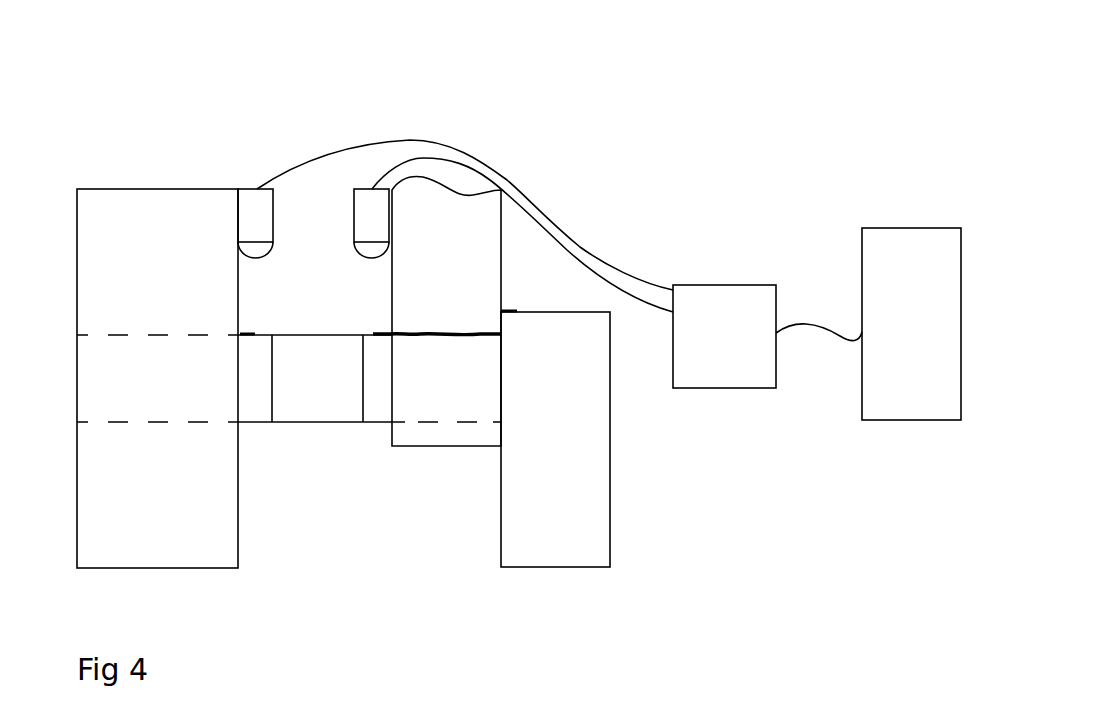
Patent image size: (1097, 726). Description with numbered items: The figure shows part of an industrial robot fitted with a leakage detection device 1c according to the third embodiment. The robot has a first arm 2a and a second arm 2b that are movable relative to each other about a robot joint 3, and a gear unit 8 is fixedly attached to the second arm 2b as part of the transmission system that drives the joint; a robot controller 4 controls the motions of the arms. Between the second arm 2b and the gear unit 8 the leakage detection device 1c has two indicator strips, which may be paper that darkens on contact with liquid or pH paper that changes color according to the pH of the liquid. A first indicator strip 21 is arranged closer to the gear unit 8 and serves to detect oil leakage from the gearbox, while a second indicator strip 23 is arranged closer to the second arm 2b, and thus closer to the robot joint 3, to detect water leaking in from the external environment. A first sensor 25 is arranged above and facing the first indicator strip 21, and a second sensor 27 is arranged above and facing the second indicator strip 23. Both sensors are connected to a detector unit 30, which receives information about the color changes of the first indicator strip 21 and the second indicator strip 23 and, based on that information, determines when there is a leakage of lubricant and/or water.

The leakage detection device 1c is at (315, 128).
The gear unit 8 is at (70, 296).
The first sensor 25 is at (258, 259).
The second sensor 27 is at (372, 259).
The first indicator strip 21 is at (262, 424).
The second indicator strip 23 is at (378, 424).
The second arm 2b is at (502, 273).
The robot joint 3 is at (452, 331).
The first arm 2a is at (610, 543).
The detector unit 30 is at (728, 285).
The robot controller 4 is at (862, 267).